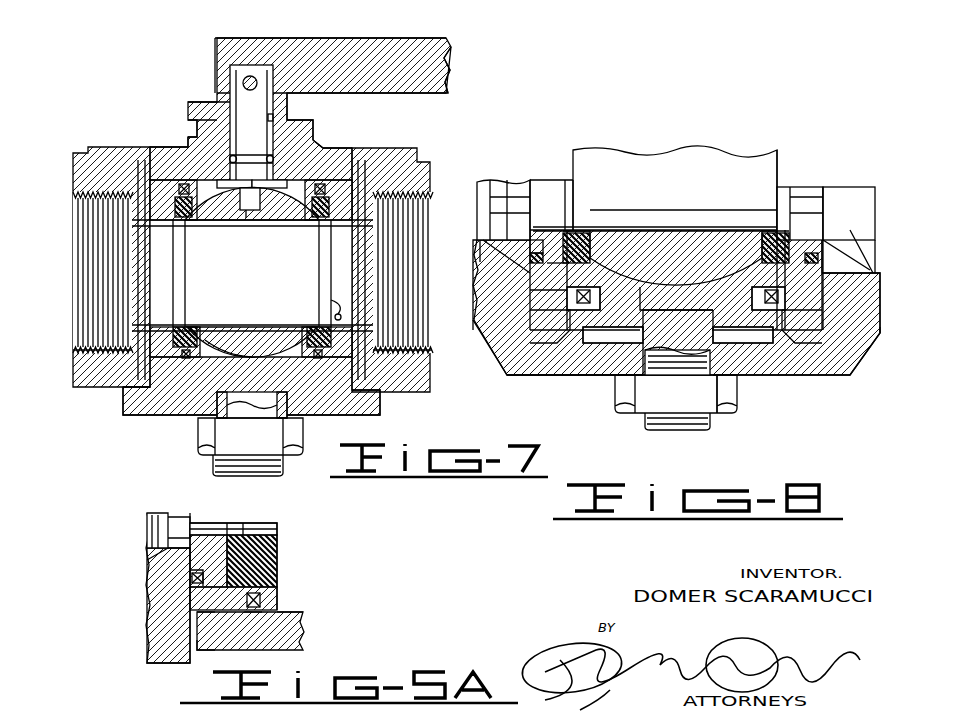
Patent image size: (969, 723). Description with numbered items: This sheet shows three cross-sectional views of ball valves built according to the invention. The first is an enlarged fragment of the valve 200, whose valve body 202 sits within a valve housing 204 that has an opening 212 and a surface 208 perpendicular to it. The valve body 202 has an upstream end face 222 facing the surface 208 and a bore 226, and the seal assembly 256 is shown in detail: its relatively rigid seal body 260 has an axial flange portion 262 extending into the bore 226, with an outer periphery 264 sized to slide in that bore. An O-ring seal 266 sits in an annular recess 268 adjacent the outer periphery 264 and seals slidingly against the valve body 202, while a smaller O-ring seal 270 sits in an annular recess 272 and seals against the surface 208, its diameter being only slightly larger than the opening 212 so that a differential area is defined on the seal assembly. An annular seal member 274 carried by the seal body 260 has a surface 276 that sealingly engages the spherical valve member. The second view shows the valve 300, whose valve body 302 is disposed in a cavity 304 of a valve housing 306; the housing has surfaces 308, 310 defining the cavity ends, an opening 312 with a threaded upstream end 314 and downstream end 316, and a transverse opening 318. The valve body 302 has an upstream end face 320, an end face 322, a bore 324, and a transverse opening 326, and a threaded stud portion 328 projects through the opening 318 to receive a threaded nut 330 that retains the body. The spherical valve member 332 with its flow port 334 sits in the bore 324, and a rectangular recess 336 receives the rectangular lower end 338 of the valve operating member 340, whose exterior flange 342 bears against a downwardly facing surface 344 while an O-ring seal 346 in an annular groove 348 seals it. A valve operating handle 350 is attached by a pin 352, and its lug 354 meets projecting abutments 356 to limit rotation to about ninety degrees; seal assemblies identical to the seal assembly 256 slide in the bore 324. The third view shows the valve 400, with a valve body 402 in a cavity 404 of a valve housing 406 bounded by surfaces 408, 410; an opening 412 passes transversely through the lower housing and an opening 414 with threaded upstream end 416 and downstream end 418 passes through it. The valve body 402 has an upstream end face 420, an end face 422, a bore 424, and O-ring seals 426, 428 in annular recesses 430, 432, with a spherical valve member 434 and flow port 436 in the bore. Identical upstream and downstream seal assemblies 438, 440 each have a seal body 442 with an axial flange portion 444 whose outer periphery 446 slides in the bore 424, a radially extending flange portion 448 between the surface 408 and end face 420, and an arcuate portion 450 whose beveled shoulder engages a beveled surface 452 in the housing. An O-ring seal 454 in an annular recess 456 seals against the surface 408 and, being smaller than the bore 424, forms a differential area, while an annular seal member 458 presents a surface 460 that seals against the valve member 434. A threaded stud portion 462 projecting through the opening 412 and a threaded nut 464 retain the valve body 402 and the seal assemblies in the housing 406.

In FIG. 5A, the valve 200 is at (318, 558).
In FIG. 5A, the valve body 202 is at (303, 648).
In FIG. 5A, the valve housing 204 is at (167, 660).
In FIG. 5A, the surface 208 is at (190, 627).
In FIG. 5A, the opening 212 is at (147, 523).
In FIG. 5A, the upstream end face 222 is at (196, 643).
In FIG. 5A, the bore 226 is at (303, 620).
In FIG. 7, the seal assembly 256 is at (167, 318).
In FIG. 5A, the seal assembly 256 is at (222, 513).
In FIG. 5A, the seal body 260 is at (190, 603).
In FIG. 5A, the axial flange portion 262 is at (267, 593).
In FIG. 5A, the outer periphery 264 is at (205, 613).
In FIG. 7, the O-ring seal 266 is at (191, 360).
In FIG. 5A, the O-ring seal 266 is at (249, 612).
In FIG. 5A, the annular recess 268 is at (260, 603).
In FIG. 7, the O-ring seal 270 is at (147, 360).
In FIG. 5A, the O-ring seal 270 is at (190, 580).
In FIG. 5A, the annular recess 272 is at (190, 576).
In FIG. 7, the annular seal member 274 is at (180, 316).
In FIG. 5A, the annular seal member 274 is at (247, 532).
In FIG. 5A, the surface 276 is at (255, 550).
In FIG. 7, the valve 300 is at (412, 36).
In FIG. 7, the valve body 302 is at (345, 148).
In FIG. 7, the cavity 304 is at (150, 392).
In FIG. 7, the valve housing 306 is at (400, 393).
In FIG. 7, the surface 308 is at (162, 146).
In FIG. 7, the surface 310 is at (354, 148).
In FIG. 7, the opening 312 is at (92, 245).
In FIG. 7, the upstream end 314 is at (90, 328).
In FIG. 7, the downstream end 316 is at (408, 332).
In FIG. 7, the opening 318 is at (217, 414).
In FIG. 7, the upstream end face 320 is at (140, 174).
In FIG. 7, the end face 322 is at (392, 270).
In FIG. 7, the bore 324 is at (252, 357).
In FIG. 7, the opening 326 is at (270, 118).
In FIG. 7, the threaded stud portion 328 is at (223, 476).
In FIG. 7, the threaded nut 330 is at (212, 440).
In FIG. 7, the valve member 332 is at (238, 348).
In FIG. 7, the flow port 334 is at (234, 284).
In FIG. 7, the rectangular recess 336 is at (258, 215).
In FIG. 7, the rectangular lower end 338 is at (246, 220).
In FIG. 7, the valve operating member 340 is at (240, 98).
In FIG. 7, the exterior flange 342 is at (285, 183).
In FIG. 7, the downwardly facing surface 344 is at (222, 182).
In FIG. 7, the O-ring seal 346 is at (274, 158).
In FIG. 7, the annular groove 348 is at (232, 158).
In FIG. 7, the valve operating handle 350 is at (290, 46).
In FIG. 7, the pin 352 is at (258, 82).
In FIG. 7, the lug 354 is at (188, 114).
In FIG. 7, the projecting abutments 356 is at (195, 132).
In FIG. 8, the valve 400 is at (745, 98).
In FIG. 8, the valve body 402 is at (690, 345).
In FIG. 8, the cavity 404 is at (607, 367).
In FIG. 8, the valve housing 406 is at (503, 363).
In FIG. 8, the surface 408 is at (540, 305).
In FIG. 8, the surface 410 is at (822, 297).
In FIG. 8, the opening 412 is at (713, 343).
In FIG. 8, the opening 414 is at (513, 183).
In FIG. 8, the upstream end 416 is at (477, 207).
In FIG. 8, the downstream end 418 is at (873, 188).
In FIG. 8, the upstream end face 420 is at (560, 311).
In FIG. 8, the end face 422 is at (823, 322).
In FIG. 8, the bore 424 is at (707, 287).
In FIG. 8, the O-ring seal 426 is at (577, 312).
In FIG. 8, the O-ring seal 428 is at (777, 303).
In FIG. 8, the annular recess 430 is at (592, 296).
In FIG. 8, the annular recess 432 is at (767, 297).
In FIG. 8, the valve member 434 is at (667, 254).
In FIG. 8, the flow port 436 is at (702, 155).
In FIG. 8, the upstream seal assembly 438 is at (547, 176).
In FIG. 8, the downstream seal assembly 440 is at (803, 184).
In FIG. 8, the seal body 442 is at (558, 190).
In FIG. 8, the axial flange portion 444 is at (617, 273).
In FIG. 8, the outer periphery 446 is at (580, 267).
In FIG. 8, the radially extending flange portion 448 is at (530, 290).
In FIG. 8, the arcuate portion 450 is at (537, 353).
In FIG. 8, the beveled surface 452 is at (572, 341).
In FIG. 8, the O-ring seal 454 is at (482, 283).
In FIG. 8, the annular recess 456 is at (480, 264).
In FIG. 8, the annular seal member 458 is at (573, 233).
In FIG. 8, the surface 460 is at (590, 227).
In FIG. 8, the threaded stud portion 462 is at (688, 430).
In FIG. 8, the threaded nut 464 is at (723, 407).